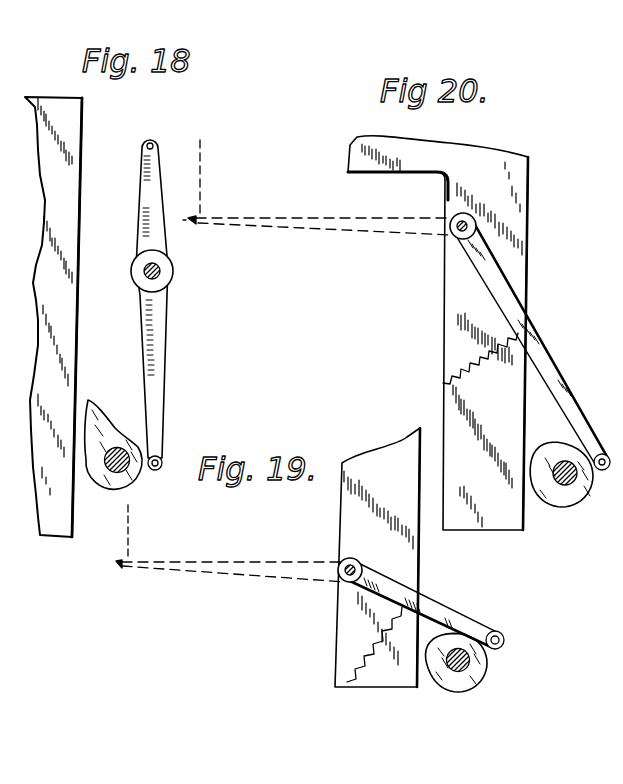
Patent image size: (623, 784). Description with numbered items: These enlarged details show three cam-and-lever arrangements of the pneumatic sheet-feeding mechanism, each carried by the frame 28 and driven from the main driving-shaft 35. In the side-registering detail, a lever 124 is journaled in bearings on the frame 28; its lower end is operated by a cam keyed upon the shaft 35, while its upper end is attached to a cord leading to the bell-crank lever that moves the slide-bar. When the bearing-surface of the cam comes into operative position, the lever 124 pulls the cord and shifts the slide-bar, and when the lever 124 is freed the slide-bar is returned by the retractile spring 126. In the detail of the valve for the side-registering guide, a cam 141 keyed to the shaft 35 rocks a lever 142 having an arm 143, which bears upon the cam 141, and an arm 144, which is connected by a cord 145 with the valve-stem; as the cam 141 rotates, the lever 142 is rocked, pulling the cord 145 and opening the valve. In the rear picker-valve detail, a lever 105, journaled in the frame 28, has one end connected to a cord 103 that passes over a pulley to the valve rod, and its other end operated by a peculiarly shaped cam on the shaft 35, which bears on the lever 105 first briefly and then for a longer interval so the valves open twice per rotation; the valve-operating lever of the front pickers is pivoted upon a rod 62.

In FIG. 18, the frame 28 is at (65, 342).
In FIG. 20, the frame 28 is at (505, 420).
In FIG. 19, the frame 28 is at (405, 553).
In FIG. 18, the driving-shaft 35 is at (114, 467).
In FIG. 20, the driving-shaft 35 is at (563, 482).
In FIG. 19, the driving-shaft 35 is at (452, 668).
In FIG. 20, the rod 62 is at (457, 232).
In FIG. 18, the cord 103 is at (200, 177).
In FIG. 20, the lever 105 is at (502, 288).
In FIG. 18, the lever 124 is at (153, 233).
In FIG. 18, the retractile spring 126 is at (97, 417).
In FIG. 19, the cam 141 is at (478, 673).
In FIG. 19, the lever 142 is at (307, 643).
In FIG. 19, the arm 143 is at (440, 608).
In FIG. 19, the arm 144 is at (245, 560).
In FIG. 19, the cord 145 is at (130, 525).